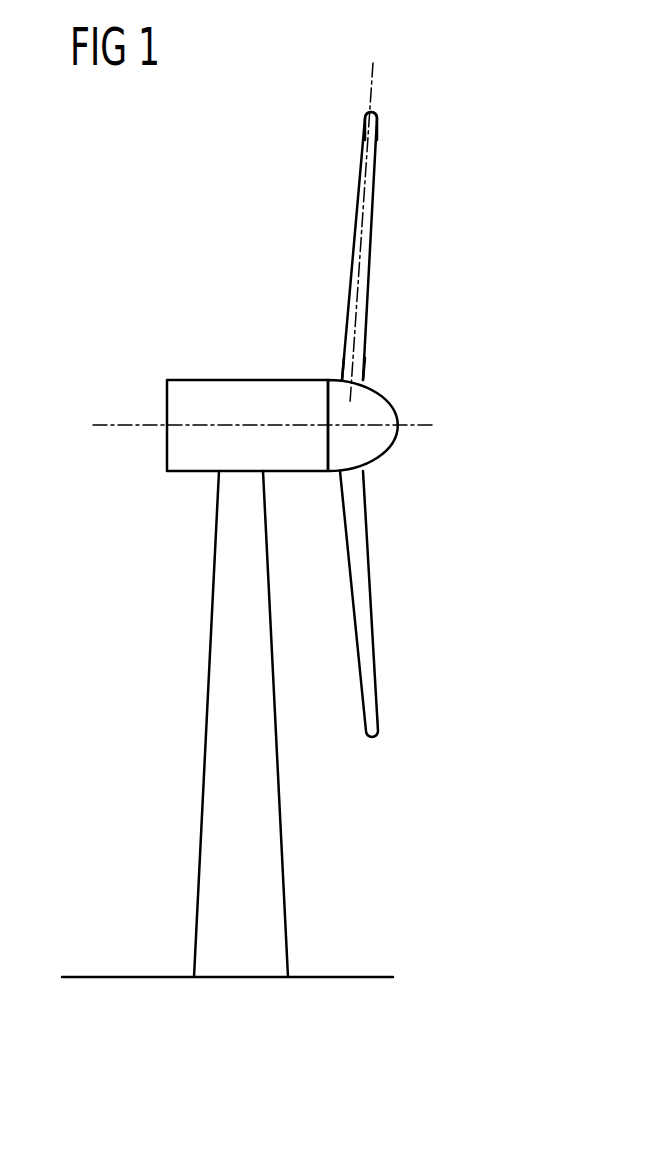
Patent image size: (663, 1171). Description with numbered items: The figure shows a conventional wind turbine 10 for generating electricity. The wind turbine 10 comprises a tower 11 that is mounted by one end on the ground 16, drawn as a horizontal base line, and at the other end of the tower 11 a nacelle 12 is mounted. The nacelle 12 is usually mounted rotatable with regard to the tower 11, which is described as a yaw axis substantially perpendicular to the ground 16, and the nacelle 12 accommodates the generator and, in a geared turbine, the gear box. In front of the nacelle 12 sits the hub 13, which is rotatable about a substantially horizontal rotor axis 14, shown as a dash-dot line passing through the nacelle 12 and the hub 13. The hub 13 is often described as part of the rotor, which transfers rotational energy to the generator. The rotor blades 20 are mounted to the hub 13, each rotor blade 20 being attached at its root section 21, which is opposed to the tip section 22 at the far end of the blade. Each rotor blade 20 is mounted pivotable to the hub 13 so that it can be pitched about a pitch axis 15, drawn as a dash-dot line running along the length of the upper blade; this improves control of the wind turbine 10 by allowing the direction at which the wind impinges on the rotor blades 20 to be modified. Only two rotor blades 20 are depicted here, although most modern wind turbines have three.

The wind turbine 10 is at (138, 614).
The tower 11 is at (262, 808).
The nacelle 12 is at (218, 379).
The hub 13 is at (392, 402).
The rotor axis 14 is at (107, 424).
The pitch axis 15 is at (373, 80).
The ground 16 is at (117, 975).
The rotor blade 20 is at (404, 241).
The root section 21 is at (356, 373).
The tip section 22 is at (378, 127).